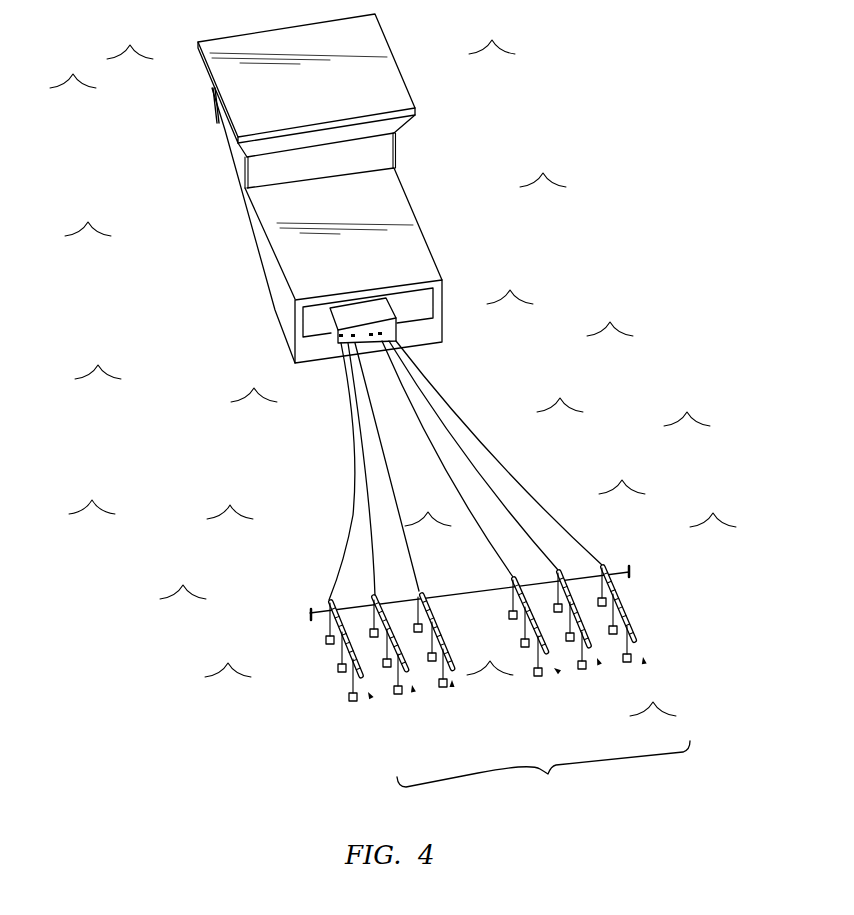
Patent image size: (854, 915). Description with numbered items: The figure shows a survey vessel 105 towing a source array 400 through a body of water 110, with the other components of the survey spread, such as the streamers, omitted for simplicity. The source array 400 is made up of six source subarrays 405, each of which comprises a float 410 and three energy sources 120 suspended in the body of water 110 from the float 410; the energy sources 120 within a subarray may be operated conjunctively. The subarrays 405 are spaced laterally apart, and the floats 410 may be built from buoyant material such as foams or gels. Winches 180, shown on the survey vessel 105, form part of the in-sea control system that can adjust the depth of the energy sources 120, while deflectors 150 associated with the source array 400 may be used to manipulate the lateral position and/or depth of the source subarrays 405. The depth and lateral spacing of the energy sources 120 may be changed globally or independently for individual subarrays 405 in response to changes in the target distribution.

The body of water 110 is at (613, 107).
The survey vessel 105 is at (402, 190).
The winches 180 is at (396, 313).
The deflectors 150 is at (308, 615).
The float 410 is at (420, 591).
The energy sources 120 is at (329, 646).
The source subarrays 405 is at (452, 687).
The source array 400 is at (548, 774).